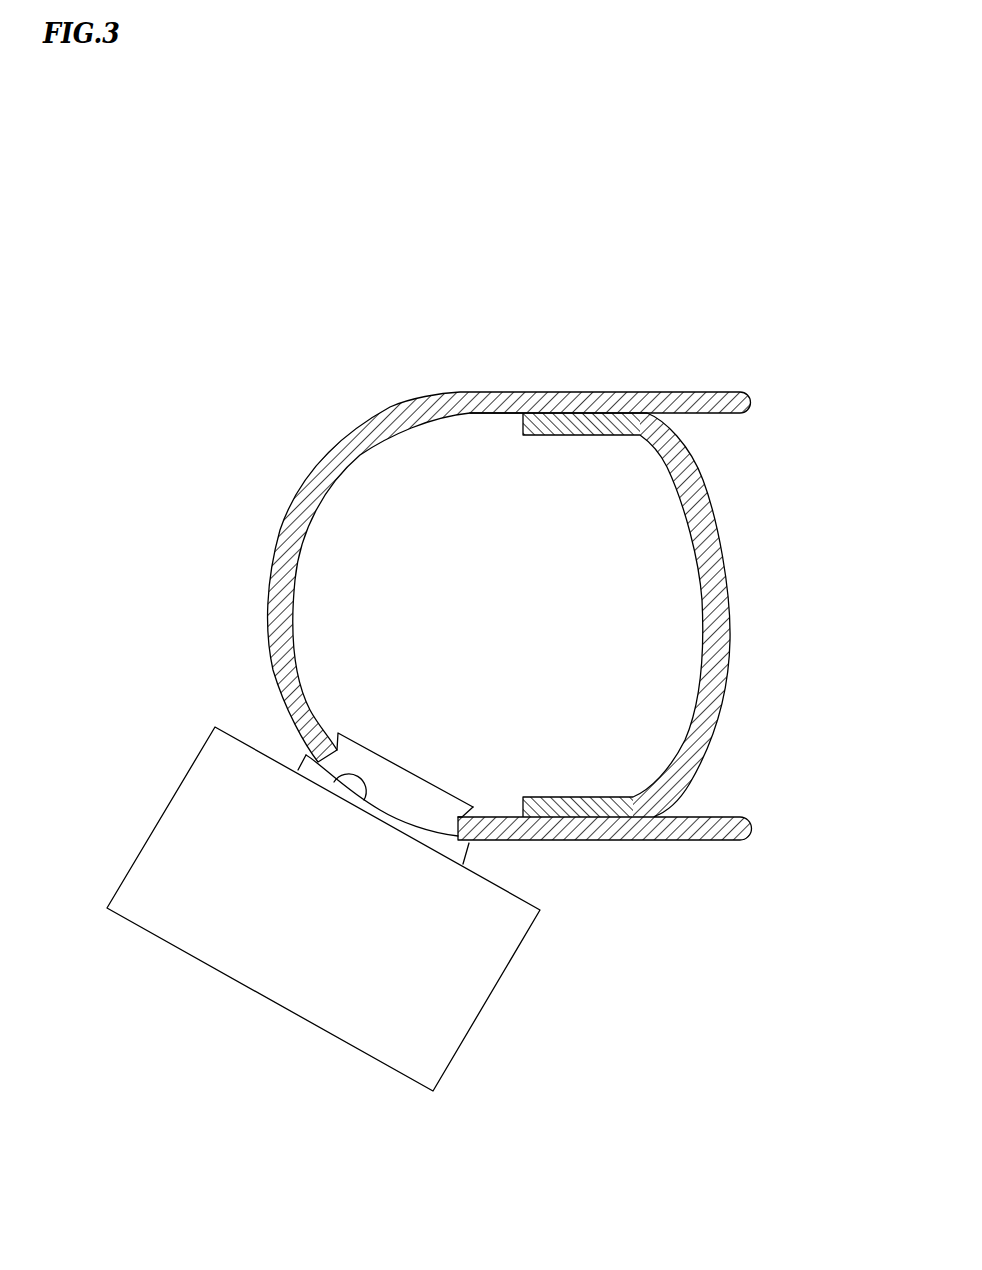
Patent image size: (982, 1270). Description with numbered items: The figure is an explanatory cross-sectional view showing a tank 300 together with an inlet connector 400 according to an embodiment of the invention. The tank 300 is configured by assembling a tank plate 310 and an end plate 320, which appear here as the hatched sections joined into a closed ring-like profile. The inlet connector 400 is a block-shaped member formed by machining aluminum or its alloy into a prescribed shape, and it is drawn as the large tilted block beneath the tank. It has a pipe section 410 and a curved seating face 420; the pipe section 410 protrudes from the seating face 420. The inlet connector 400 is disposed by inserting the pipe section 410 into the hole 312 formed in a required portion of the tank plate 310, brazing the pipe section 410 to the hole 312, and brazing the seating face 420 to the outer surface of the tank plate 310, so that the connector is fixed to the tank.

The tank 300 is at (486, 555).
The tank plate 310 is at (268, 593).
The hole 312 is at (452, 818).
The end plate 320 is at (722, 733).
The inlet connector 400 is at (480, 1021).
The pipe section 410 is at (395, 762).
The seating face 420 is at (331, 790).